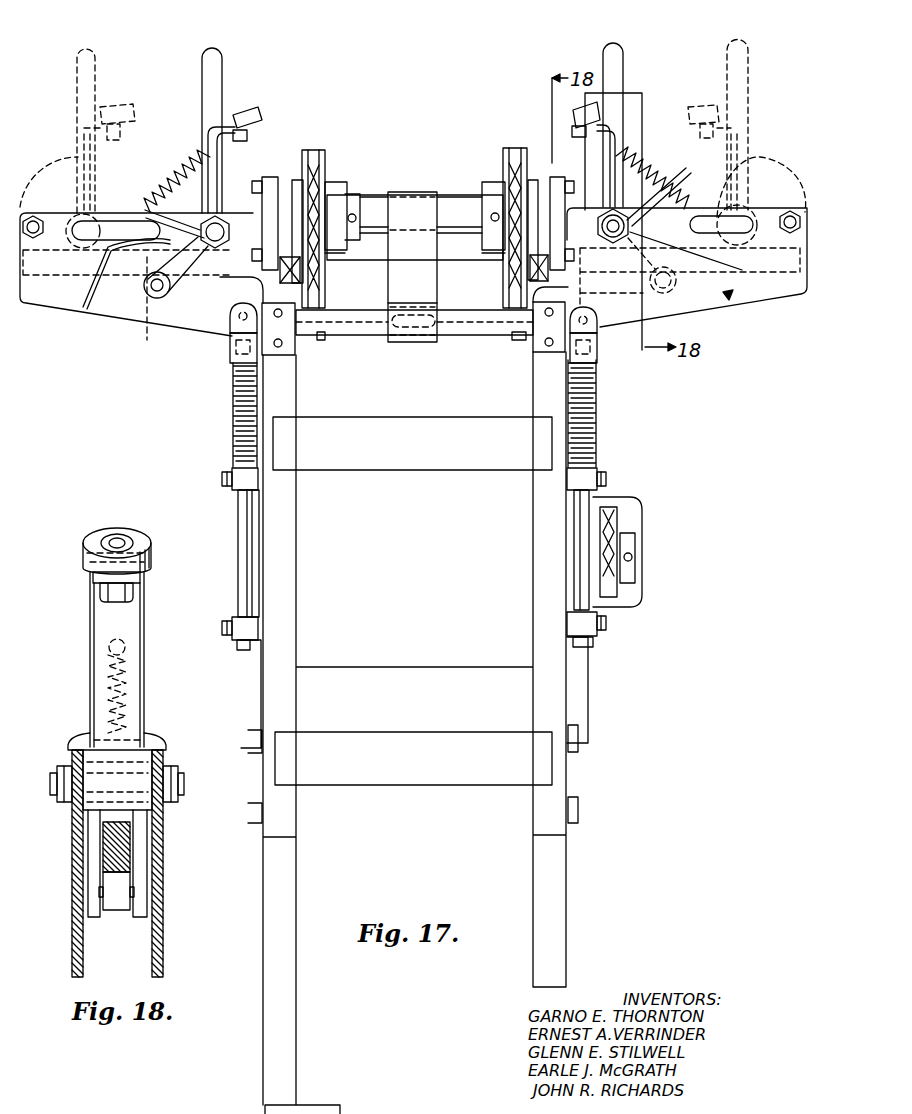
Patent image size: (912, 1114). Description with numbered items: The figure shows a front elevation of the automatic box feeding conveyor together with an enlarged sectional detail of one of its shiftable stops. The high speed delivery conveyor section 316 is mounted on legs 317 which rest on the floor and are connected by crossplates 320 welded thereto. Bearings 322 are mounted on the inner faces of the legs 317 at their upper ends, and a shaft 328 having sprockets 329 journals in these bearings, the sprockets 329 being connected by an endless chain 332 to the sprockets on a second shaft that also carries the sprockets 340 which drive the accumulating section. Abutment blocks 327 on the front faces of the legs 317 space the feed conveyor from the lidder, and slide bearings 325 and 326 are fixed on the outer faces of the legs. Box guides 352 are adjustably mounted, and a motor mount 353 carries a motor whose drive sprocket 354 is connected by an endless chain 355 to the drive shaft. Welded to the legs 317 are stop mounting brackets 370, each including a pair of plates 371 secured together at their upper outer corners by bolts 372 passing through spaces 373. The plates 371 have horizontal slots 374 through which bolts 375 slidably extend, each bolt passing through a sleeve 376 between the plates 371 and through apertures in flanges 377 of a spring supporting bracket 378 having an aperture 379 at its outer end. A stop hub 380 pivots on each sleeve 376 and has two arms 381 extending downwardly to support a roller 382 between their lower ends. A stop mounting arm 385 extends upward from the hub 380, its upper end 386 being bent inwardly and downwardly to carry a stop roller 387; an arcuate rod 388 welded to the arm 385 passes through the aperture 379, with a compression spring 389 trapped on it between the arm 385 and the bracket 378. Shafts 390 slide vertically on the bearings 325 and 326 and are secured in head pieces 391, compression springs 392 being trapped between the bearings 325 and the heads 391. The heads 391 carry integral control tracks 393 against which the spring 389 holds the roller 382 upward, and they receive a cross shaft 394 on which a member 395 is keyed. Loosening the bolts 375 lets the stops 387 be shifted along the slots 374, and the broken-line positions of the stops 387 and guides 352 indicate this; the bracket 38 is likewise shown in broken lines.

In FIG. 17, the bracket (phantom position) 38 is at (80, 125).
In FIG. 17, the high speed delivery conveyor section 316 is at (326, 142).
In FIG. 17, the legs 317 is at (285, 633).
In FIG. 17, the crossplates 320 is at (452, 405).
In FIG. 17, the bearings 322 is at (267, 177).
In FIG. 17, the slide bearing 325 is at (233, 475).
In FIG. 17, the slide bearing 326 is at (238, 618).
In FIG. 17, the abutment blocks 327 is at (288, 347).
In FIG. 17, the shaft 328 is at (365, 213).
In FIG. 17, the sprockets 329 is at (333, 185).
In FIG. 17, the endless chain 332 is at (327, 150).
In FIG. 17, the sprockets 340 is at (282, 265).
In FIG. 17, the box guides 352 is at (95, 82).
In FIG. 17, the motor mount 353 is at (580, 715).
In FIG. 17, the drive sprocket 354 is at (627, 567).
In FIG. 17, the endless chain 355 is at (627, 513).
In FIG. 17, the stop mounting brackets 370 is at (65, 295).
In FIG. 18, the stop mounting brackets 370 is at (163, 926).
In FIG. 17, the plates 371 is at (75, 307).
In FIG. 18, the plates 371 is at (78, 880).
In FIG. 17, the bolts 372 is at (35, 218).
In FIG. 17, the spaces 373 is at (37, 250).
In FIG. 17, the horizontal slots 374 is at (117, 225).
In FIG. 17, the bolts 375 is at (633, 230).
In FIG. 18, the bolts 375 is at (55, 797).
In FIG. 17, the sleeve 376 is at (414, 228).
In FIG. 18, the sleeve 376 is at (177, 757).
In FIG. 18, the flanges 377 is at (72, 817).
In FIG. 17, the spring supporting bracket 378 is at (213, 218).
In FIG. 18, the spring supporting bracket 378 is at (150, 735).
In FIG. 18, the aperture 379 is at (135, 727).
In FIG. 18, the stop hub 380 is at (133, 778).
In FIG. 17, the arms 381 is at (172, 293).
In FIG. 18, the arms 381 is at (95, 855).
In FIG. 17, the roller 382 is at (676, 297).
In FIG. 18, the roller 382 is at (122, 900).
In FIG. 17, the stop mounting arm 385 is at (217, 157).
In FIG. 18, the stop mounting arm 385 is at (133, 653).
In FIG. 17, the upper end 386 is at (257, 127).
In FIG. 18, the upper end 386 is at (140, 585).
In FIG. 17, the stop roller 387 is at (250, 110).
In FIG. 18, the stop roller 387 is at (132, 535).
In FIG. 17, the arcuate rod 388 is at (178, 185).
In FIG. 18, the arcuate rod 388 is at (135, 677).
In FIG. 17, the compression spring 389 is at (180, 182).
In FIG. 18, the compression spring 389 is at (107, 690).
In FIG. 17, the shafts 390 is at (243, 535).
In FIG. 17, the head pieces 391 is at (228, 353).
In FIG. 17, the compression springs 392 is at (232, 395).
In FIG. 17, the control tracks 393 is at (127, 268).
In FIG. 18, the control tracks 393 is at (123, 863).
In FIG. 17, the cross shaft 394 is at (480, 322).
In FIG. 17, the member 395 is at (432, 290).